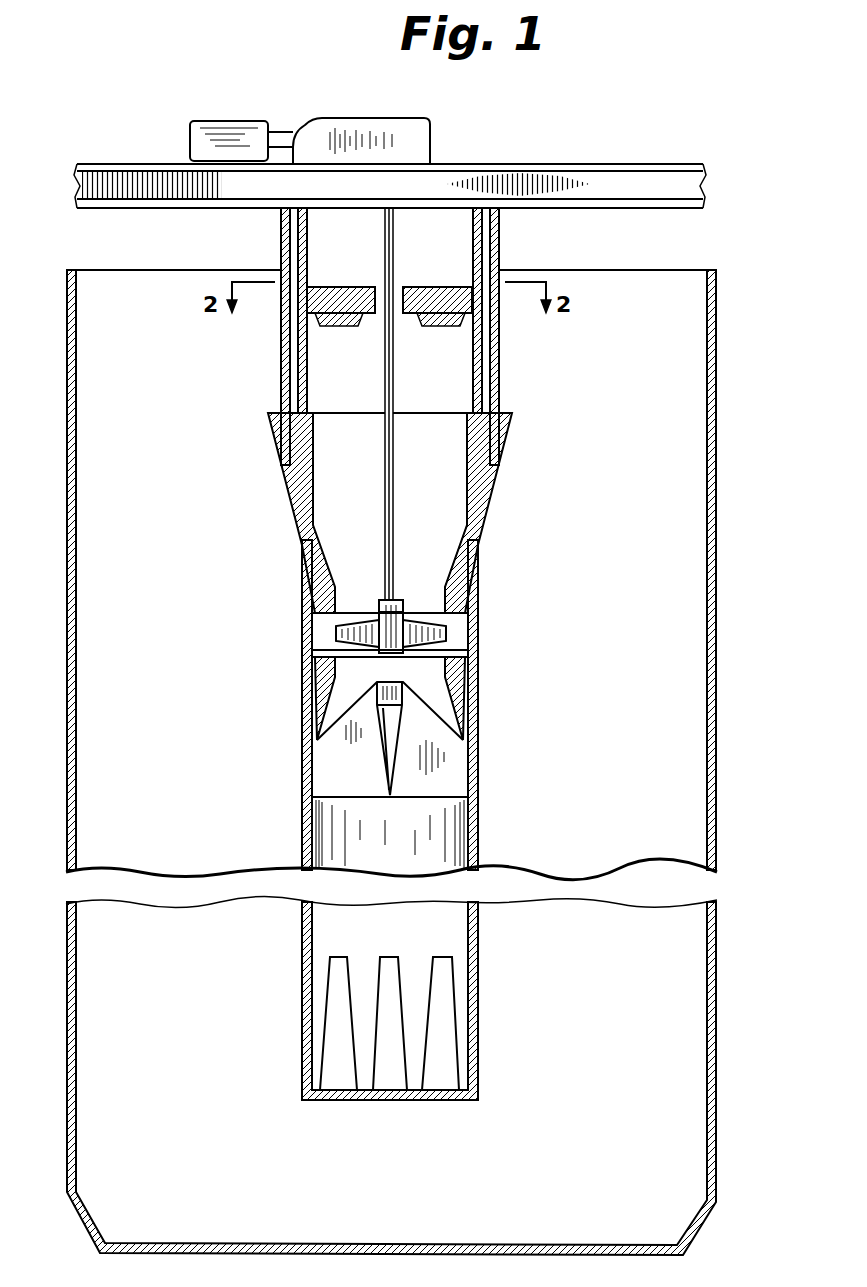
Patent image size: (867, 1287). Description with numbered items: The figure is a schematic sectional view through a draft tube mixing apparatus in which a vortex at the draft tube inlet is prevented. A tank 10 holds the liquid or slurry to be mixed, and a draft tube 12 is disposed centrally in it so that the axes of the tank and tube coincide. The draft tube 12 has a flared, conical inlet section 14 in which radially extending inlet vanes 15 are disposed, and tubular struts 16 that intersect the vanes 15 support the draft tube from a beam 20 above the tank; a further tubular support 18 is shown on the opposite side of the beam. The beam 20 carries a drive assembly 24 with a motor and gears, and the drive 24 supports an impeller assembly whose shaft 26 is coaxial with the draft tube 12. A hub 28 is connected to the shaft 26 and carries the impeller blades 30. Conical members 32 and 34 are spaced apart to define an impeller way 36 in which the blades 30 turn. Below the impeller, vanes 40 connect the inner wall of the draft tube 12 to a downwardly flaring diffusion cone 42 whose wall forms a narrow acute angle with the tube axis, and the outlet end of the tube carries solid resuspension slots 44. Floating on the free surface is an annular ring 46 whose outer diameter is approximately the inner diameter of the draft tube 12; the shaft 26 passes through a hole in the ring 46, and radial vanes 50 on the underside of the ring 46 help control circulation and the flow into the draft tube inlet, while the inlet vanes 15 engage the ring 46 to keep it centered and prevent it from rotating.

The tank 10 is at (718, 622).
The draft tube 12 is at (478, 829).
The inlet section 14 is at (495, 475).
The inlet vanes 15 is at (313, 437).
The struts 16 is at (281, 368).
The inner tube 18 is at (499, 368).
The beam 20 is at (532, 168).
The drive assembly 24 is at (346, 134).
The shaft 26 is at (205, 120).
The hub 28 is at (388, 651).
The impeller blades 30 is at (363, 621).
The conical member 32 is at (478, 585).
The conical member 34 is at (477, 681).
The impeller way 36 is at (320, 628).
The vanes 40 is at (320, 775).
The diffusion cone 42 is at (380, 756).
The solid resuspension slots 44 is at (437, 956).
The floating ring 46 is at (438, 287).
The radial vanes 50 is at (344, 326).